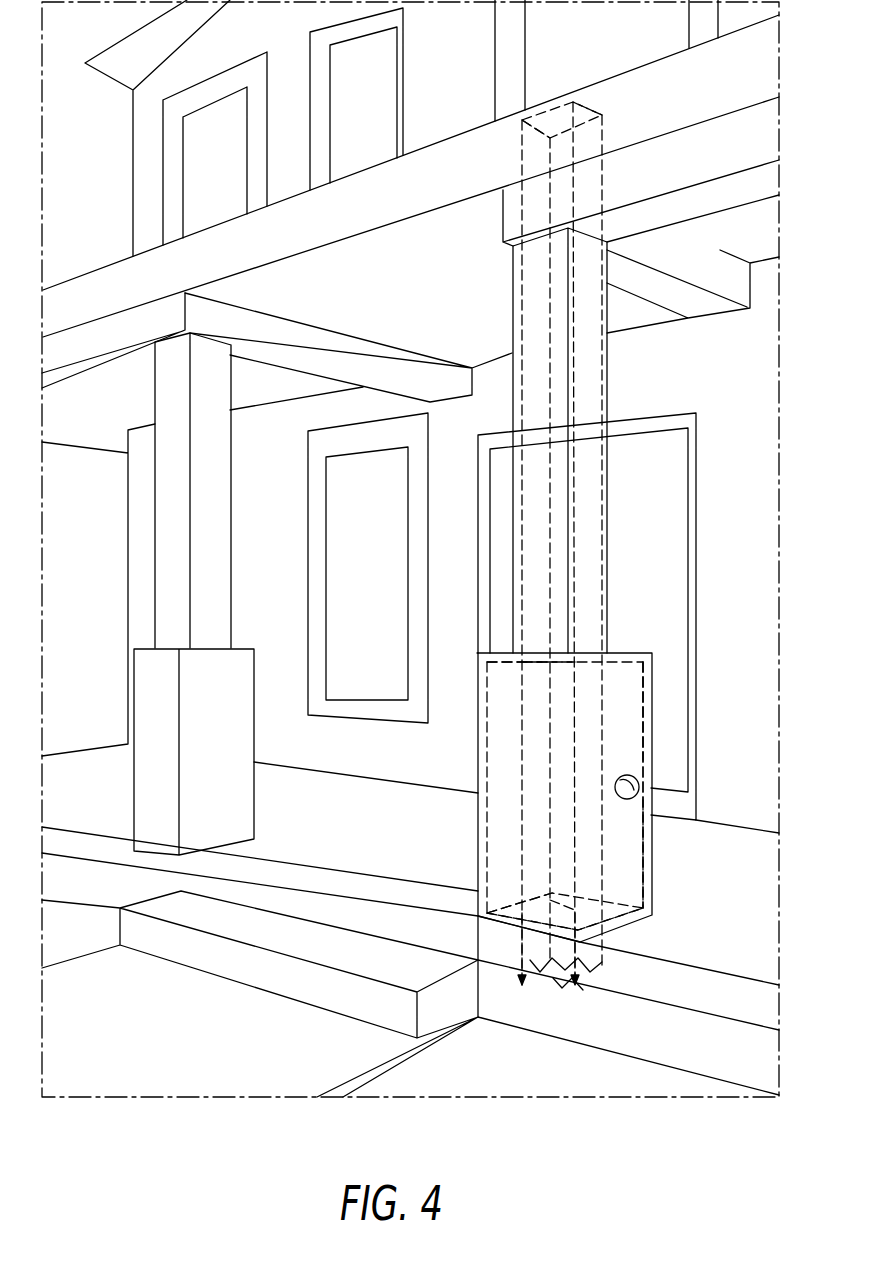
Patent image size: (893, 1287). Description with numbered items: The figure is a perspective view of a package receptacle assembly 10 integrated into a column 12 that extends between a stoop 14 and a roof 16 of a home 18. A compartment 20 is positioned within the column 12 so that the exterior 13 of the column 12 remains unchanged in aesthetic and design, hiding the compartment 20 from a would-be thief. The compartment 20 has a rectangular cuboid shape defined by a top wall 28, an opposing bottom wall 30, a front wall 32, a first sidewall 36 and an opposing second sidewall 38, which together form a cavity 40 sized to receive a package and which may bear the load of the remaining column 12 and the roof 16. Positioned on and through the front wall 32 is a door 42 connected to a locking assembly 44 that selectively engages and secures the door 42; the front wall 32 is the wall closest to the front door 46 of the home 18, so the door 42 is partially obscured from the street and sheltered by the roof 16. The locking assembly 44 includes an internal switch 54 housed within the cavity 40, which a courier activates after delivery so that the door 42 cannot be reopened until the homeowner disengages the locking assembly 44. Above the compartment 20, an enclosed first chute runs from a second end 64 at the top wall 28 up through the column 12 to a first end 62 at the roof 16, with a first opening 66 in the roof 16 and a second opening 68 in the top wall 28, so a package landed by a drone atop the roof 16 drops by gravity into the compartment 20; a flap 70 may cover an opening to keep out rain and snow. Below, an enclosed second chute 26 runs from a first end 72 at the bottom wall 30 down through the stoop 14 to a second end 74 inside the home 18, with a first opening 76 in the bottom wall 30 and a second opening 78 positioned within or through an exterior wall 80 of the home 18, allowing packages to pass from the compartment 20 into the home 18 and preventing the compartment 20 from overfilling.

The package receptacle assembly 10 is at (471, 746).
The column 12 is at (608, 390).
The exterior 13 is at (239, 754).
The stoop 14 is at (288, 892).
The roof 16 is at (88, 273).
The home 18 is at (128, 158).
The compartment 20 is at (650, 880).
The second chute 26 is at (610, 943).
The top wall 28 is at (625, 653).
The bottom wall 30 is at (547, 102).
The front wall 32 is at (643, 758).
The first sidewall 36 is at (503, 830).
The second sidewall 38 is at (632, 843).
The cavity 40 is at (551, 835).
The door 42 is at (635, 745).
The locking assembly 44 is at (607, 773).
The front door 46 is at (669, 555).
The internal switch 54 is at (618, 785).
The first end 62 is at (595, 110).
The second end 64 is at (521, 663).
The first opening 66 is at (548, 122).
The second opening 68 is at (533, 663).
The flap 70 is at (550, 663).
The first end 72 is at (525, 923).
The second end 74 is at (558, 990).
The first opening 76 is at (593, 903).
The second opening 78 is at (547, 980).
The exterior wall 80 is at (756, 673).